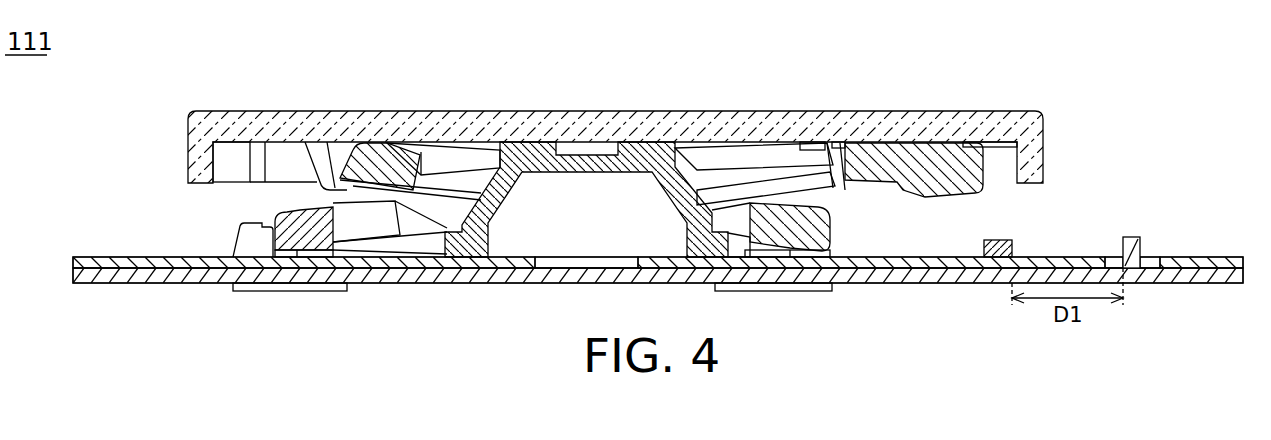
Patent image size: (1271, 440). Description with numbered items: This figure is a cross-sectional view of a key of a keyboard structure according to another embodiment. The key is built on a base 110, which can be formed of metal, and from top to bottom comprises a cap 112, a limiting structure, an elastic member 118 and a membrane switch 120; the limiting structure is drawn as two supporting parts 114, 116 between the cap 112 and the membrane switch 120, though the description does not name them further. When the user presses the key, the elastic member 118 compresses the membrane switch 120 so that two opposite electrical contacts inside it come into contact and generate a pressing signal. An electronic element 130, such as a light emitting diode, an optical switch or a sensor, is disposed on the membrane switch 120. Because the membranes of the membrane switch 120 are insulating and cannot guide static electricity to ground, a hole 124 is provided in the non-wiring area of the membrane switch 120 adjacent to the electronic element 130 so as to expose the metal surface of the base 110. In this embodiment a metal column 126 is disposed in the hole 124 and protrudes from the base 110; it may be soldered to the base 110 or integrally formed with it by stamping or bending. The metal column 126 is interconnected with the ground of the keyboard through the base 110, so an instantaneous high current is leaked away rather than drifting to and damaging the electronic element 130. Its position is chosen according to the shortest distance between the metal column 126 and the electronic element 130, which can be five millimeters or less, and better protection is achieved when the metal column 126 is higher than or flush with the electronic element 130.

The base 110 is at (1178, 283).
The cap 112 is at (884, 120).
The first support member 114 is at (948, 162).
The second support member 116 is at (388, 152).
The elastic member 118 is at (645, 160).
The membrane switch 120 is at (860, 257).
The hole 124 is at (1150, 262).
The metal column 126 is at (1130, 237).
The electronic element 130 is at (1003, 240).